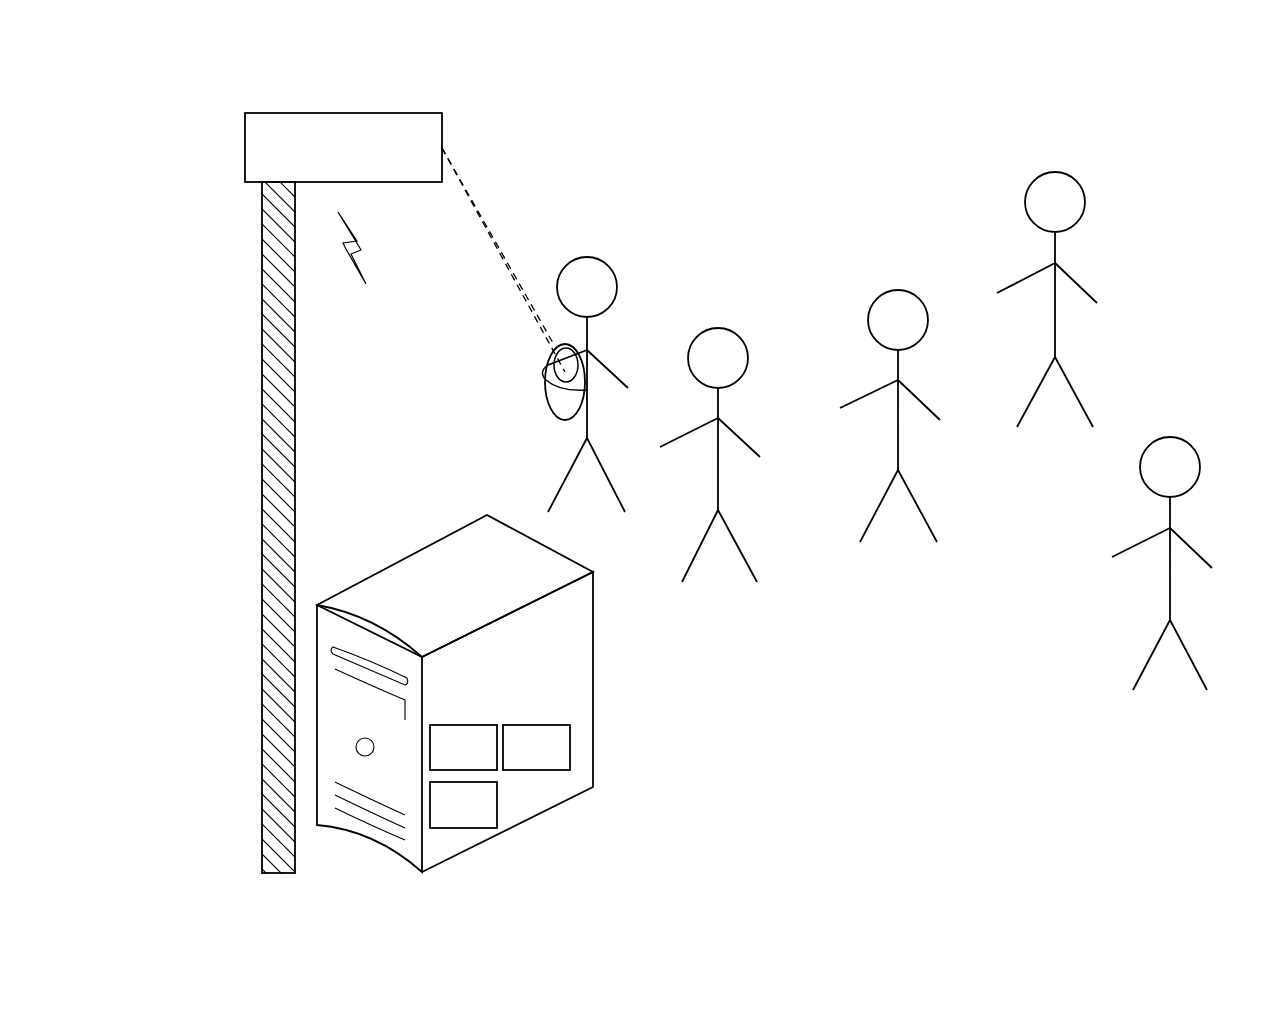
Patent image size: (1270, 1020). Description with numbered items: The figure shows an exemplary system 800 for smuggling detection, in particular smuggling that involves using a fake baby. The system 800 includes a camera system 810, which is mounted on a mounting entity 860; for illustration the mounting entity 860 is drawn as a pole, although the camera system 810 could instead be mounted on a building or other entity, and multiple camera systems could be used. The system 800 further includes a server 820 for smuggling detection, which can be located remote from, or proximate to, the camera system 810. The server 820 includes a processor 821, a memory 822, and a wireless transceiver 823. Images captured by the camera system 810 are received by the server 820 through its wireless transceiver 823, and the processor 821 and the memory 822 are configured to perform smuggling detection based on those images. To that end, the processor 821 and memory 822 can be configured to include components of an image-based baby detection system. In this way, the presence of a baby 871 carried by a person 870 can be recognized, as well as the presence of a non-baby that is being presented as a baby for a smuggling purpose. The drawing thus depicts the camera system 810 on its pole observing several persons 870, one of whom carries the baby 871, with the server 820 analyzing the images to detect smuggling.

The system for smuggling detection 800 is at (268, 78).
The camera system 810 is at (322, 173).
The server 820 is at (434, 603).
The processor 821 is at (443, 759).
The memory 822 is at (516, 759).
The wireless transceiver 823 is at (443, 816).
The mounting entity 860 is at (309, 407).
The person 870 is at (587, 257).
The baby 871 is at (538, 400).